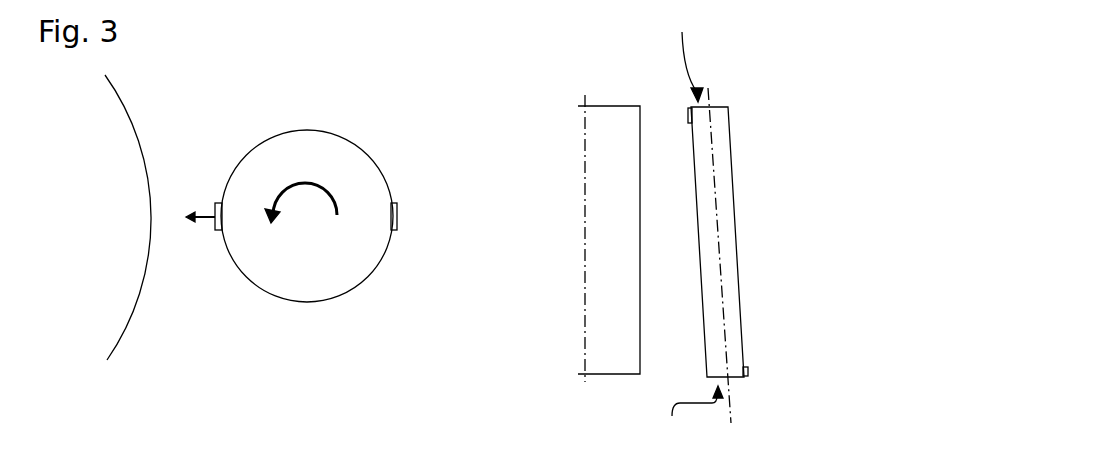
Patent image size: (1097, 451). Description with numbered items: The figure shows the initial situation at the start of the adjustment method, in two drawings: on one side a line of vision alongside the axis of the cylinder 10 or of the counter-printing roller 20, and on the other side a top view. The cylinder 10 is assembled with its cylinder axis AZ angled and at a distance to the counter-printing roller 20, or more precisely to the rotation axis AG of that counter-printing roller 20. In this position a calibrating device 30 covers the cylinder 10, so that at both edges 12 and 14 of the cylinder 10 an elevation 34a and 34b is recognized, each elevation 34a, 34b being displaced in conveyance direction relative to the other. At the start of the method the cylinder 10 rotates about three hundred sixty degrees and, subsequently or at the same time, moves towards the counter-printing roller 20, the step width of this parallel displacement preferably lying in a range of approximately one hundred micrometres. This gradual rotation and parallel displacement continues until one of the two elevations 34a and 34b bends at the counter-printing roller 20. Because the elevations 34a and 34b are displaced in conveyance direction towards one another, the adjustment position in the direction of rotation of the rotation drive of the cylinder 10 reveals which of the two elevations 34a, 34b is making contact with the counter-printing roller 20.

The cylinder 10 is at (500, 236).
The edge of the cylinder 12 is at (691, 416).
The edge of the cylinder 14 is at (659, 229).
The counter-printing roller 20 is at (58, 253).
The calibrating device 30 is at (353, 143).
The elevation 34a is at (397, 222).
The elevation 34b is at (218, 230).
The rotation axis of the counter-printing roller AG is at (585, 125).
The cylinder axis AZ is at (716, 118).